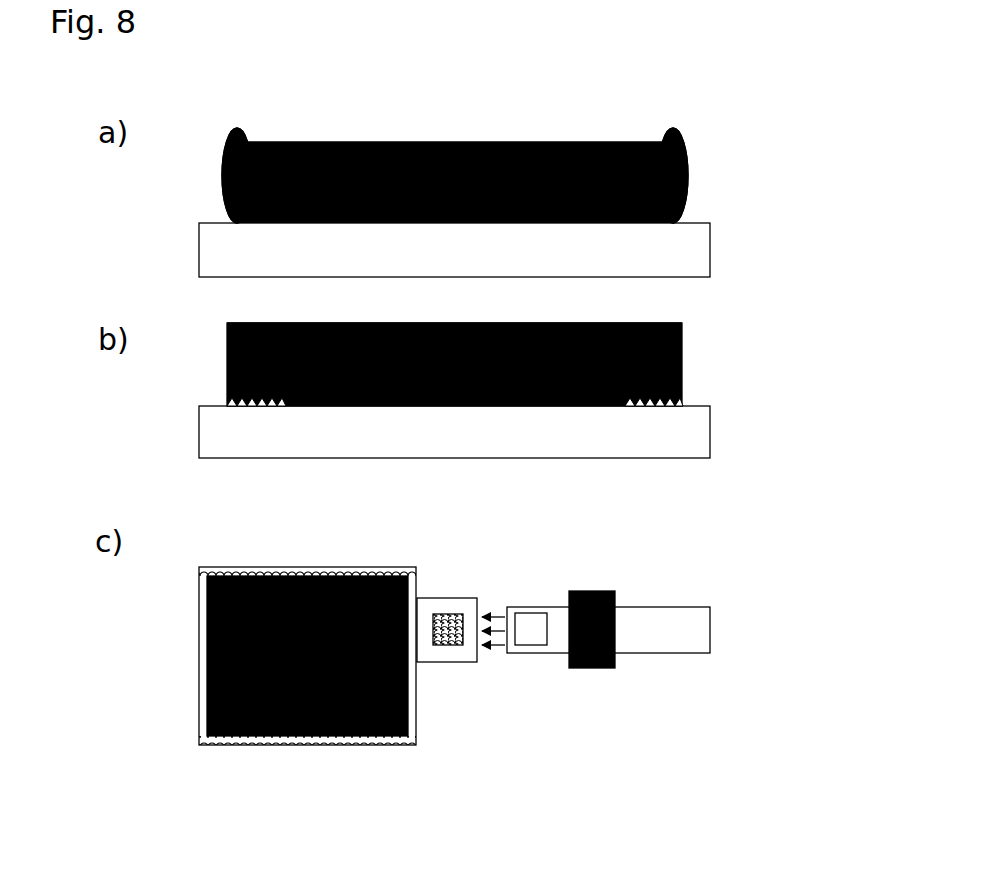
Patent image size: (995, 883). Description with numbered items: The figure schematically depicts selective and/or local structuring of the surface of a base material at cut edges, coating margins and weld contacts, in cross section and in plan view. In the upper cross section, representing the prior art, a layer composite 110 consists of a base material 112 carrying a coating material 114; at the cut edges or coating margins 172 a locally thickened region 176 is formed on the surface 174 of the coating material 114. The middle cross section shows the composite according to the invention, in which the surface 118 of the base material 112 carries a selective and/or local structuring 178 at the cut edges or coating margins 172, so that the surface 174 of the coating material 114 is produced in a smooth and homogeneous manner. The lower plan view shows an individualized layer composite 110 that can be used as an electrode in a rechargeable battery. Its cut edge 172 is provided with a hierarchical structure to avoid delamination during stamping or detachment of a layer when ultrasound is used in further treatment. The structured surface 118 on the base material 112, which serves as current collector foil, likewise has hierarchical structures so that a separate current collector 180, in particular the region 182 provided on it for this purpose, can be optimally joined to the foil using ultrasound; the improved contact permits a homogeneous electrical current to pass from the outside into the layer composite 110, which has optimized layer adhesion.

The layer composite 110 is at (798, 130).
The base material 112 is at (710, 248).
The coating material 114 is at (687, 178).
The surface of the base material 118 is at (445, 612).
The cut edge or coating margin 172 is at (673, 128).
The surface of the coating material 174 is at (413, 142).
The locally thickened region 176 is at (673, 128).
The selective and/or local structuring 178 is at (255, 406).
The separate current collector 180 is at (710, 630).
The region of the current collector 182 is at (525, 625).